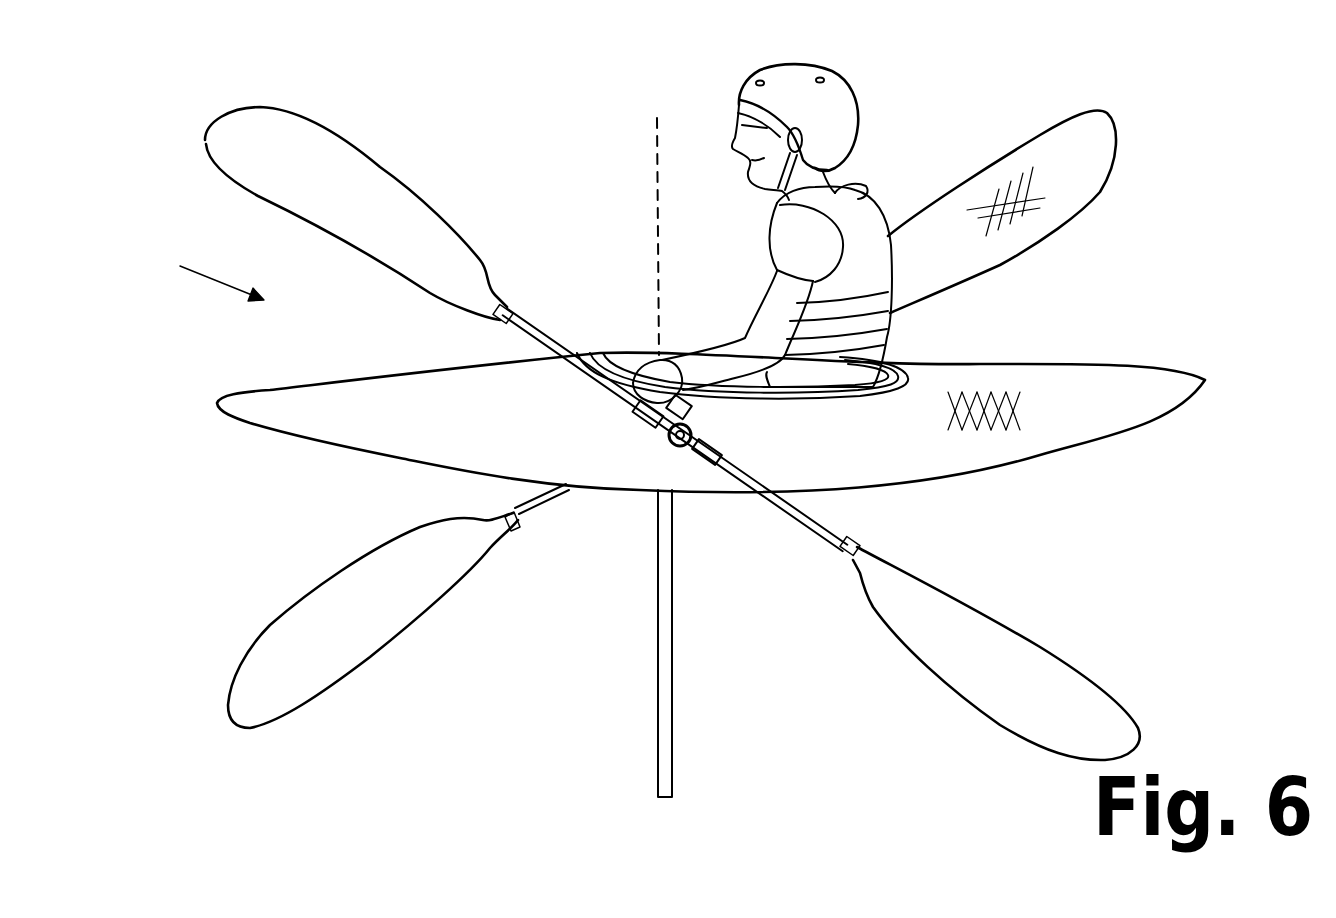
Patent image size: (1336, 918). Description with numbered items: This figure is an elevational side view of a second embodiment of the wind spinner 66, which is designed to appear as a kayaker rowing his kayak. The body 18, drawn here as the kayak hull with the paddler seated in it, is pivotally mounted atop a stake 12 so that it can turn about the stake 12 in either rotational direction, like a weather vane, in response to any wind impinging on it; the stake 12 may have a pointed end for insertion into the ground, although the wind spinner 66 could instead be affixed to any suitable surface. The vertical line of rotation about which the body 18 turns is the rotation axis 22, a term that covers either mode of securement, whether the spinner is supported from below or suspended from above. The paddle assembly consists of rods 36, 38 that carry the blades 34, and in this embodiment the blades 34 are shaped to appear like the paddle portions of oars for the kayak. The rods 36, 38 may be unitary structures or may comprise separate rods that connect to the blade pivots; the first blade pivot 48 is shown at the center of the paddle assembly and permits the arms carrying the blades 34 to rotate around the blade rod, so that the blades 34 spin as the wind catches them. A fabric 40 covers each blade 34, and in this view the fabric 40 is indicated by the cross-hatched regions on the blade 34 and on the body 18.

The stake 12 is at (673, 740).
The body 18 is at (1043, 368).
The rotation axis 22 is at (657, 137).
The blade 34 is at (317, 128).
The rod 36 is at (527, 313).
The rod 38 is at (533, 510).
The fabric 40 is at (985, 207).
The first blade pivot 48 is at (710, 457).
The wind spinner 66 is at (199, 277).